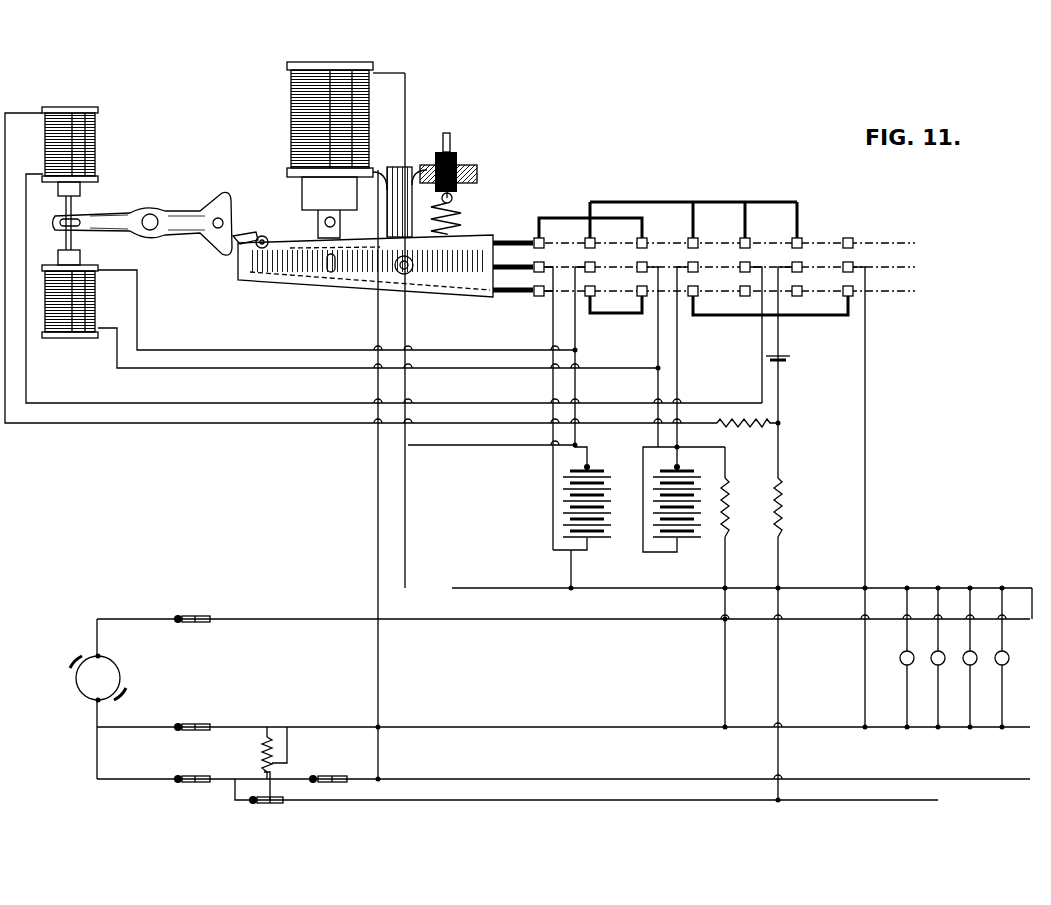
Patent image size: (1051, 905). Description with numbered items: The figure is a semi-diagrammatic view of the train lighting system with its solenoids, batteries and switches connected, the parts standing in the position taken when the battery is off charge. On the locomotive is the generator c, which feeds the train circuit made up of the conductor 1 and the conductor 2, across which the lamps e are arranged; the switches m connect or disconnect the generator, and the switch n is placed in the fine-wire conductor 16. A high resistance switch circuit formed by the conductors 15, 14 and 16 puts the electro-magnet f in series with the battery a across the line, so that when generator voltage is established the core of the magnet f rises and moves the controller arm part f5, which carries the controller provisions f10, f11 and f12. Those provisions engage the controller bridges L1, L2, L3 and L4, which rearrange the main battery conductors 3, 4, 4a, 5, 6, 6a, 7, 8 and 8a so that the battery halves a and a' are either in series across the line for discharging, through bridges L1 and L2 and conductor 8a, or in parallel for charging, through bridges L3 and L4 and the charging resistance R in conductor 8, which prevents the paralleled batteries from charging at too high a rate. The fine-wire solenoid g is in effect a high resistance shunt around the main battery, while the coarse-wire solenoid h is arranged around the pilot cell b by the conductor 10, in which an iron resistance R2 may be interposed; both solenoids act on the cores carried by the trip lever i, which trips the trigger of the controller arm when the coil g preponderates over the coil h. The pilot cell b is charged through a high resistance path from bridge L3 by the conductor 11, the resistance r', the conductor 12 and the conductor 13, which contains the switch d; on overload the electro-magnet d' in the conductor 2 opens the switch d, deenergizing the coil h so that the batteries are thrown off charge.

The solenoid h is at (98, 135).
The solenoid g is at (98, 298).
The trip lever i is at (176, 205).
The electro-magnet f is at (290, 125).
The controller arm part f5 is at (292, 290).
The controller provision f10 is at (744, 242).
The controller provision f11 is at (744, 266).
The controller provision f12 is at (744, 290).
The controller bridge L4 is at (562, 216).
The controller bridge L3 is at (685, 202).
The controller bridge L1 is at (617, 320).
The controller bridge L2 is at (712, 322).
The main battery conductor 6 is at (575, 338).
The main battery conductor 6a is at (677, 382).
The pilot cell conductor 11 is at (779, 338).
The pilot cell battery b is at (786, 364).
The pilot cell conductor 10 is at (205, 403).
The switch circuit conductor 15 is at (470, 447).
The switch circuit conductor 14 is at (378, 528).
The resistance R2 is at (745, 428).
The main battery conductor 4 is at (553, 512).
The main battery a is at (588, 518).
The main battery conductor 5 is at (571, 562).
The main battery conductor 3 is at (566, 568).
The main battery conductor 4a is at (643, 452).
The main battery conductor 7 is at (680, 462).
The main battery a' is at (696, 556).
The charging resistance R is at (730, 510).
The resistance r' is at (793, 506).
The main battery conductor 8 is at (725, 690).
The pilot cell conductor 12 is at (780, 690).
The main battery conductor 8a is at (865, 495).
The main circuit conductor 1 is at (260, 616).
The main circuit conductor 2 is at (505, 727).
The switch circuit conductor 16 is at (495, 779).
The pilot cell conductor 13 is at (498, 800).
The generator c is at (76, 688).
The switch m is at (192, 698).
The switch n is at (328, 769).
The electro-magnet d' is at (261, 763).
The overload circuit breaker switch d is at (266, 810).
The lamps e is at (1009, 660).